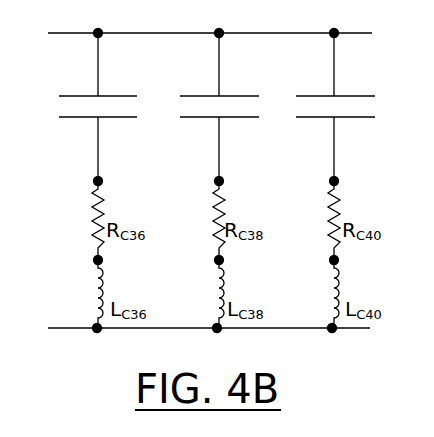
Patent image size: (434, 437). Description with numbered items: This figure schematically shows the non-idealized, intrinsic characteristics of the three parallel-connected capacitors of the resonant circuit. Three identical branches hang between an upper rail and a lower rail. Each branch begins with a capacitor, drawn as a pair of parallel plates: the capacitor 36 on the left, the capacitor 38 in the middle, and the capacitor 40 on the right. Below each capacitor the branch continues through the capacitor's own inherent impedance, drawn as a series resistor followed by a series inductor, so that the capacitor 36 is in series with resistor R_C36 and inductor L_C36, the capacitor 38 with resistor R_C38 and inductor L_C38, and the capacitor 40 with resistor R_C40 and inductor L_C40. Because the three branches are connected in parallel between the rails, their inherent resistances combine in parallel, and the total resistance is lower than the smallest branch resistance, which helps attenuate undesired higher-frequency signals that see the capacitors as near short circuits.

The capacitor 36 is at (101, 109).
The capacitor 38 is at (222, 109).
The capacitor 40 is at (339, 109).